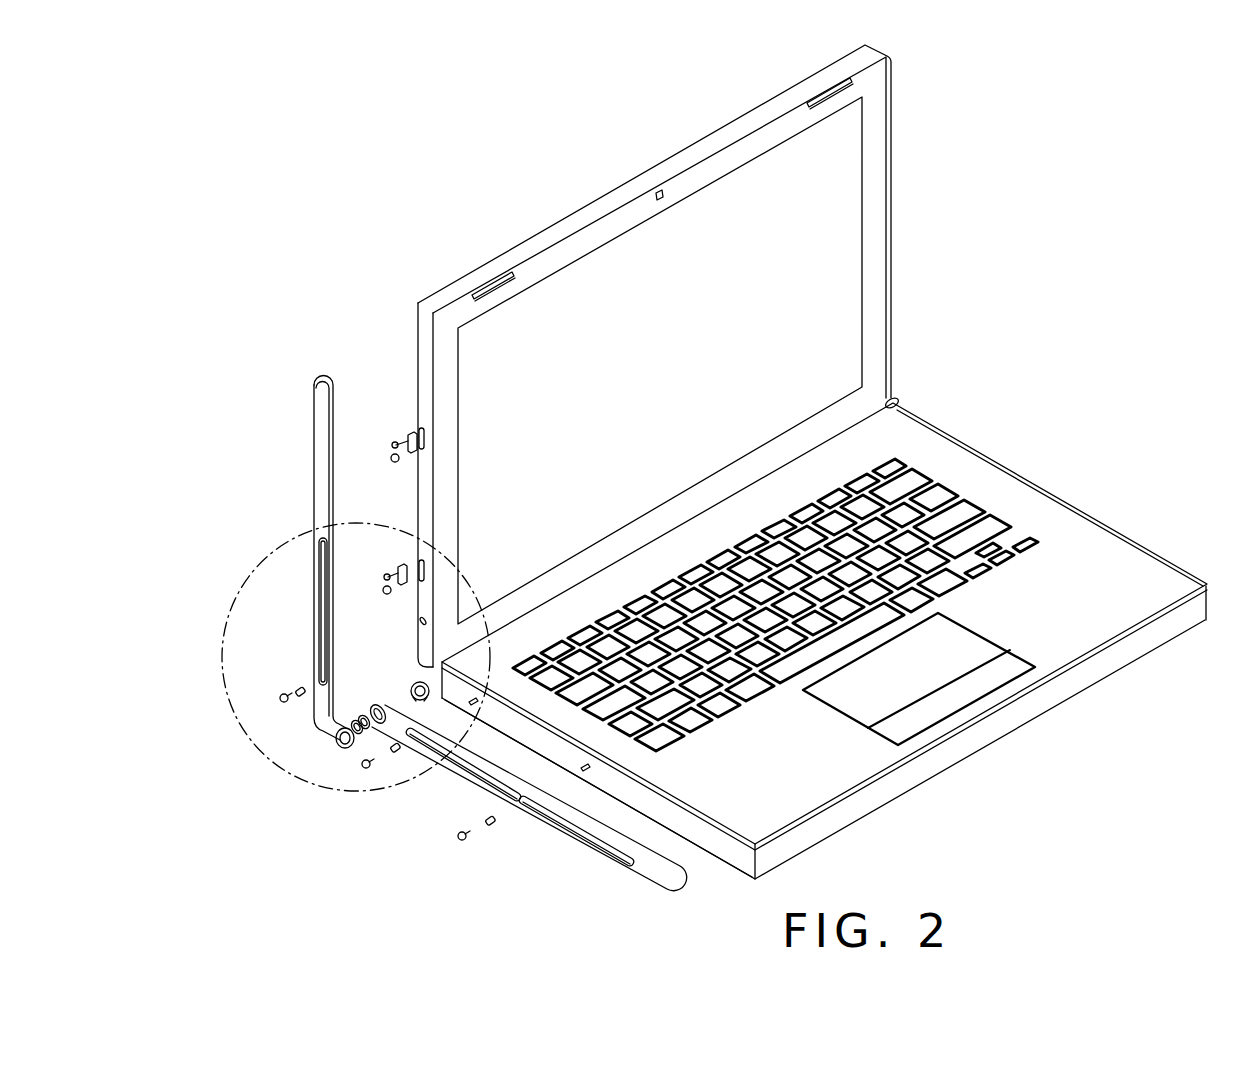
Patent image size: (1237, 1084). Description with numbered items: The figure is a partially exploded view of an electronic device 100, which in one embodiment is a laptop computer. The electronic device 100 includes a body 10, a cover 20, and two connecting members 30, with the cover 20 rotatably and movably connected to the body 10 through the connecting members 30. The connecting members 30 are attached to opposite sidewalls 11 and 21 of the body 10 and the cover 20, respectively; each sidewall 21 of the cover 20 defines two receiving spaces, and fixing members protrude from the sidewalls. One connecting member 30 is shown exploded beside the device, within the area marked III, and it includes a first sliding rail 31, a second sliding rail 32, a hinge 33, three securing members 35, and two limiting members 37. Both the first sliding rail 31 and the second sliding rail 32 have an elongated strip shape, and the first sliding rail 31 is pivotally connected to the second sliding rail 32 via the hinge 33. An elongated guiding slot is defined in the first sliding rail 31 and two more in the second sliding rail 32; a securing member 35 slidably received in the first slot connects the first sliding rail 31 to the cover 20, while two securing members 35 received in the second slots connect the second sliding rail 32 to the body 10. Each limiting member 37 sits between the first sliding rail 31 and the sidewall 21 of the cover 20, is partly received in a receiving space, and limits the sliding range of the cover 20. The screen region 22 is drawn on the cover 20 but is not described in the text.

The electronic device 100 is at (468, 160).
The body 10 is at (1068, 555).
The sidewall 11 is at (718, 843).
The cover 20 is at (875, 200).
The sidewall 21 is at (423, 370).
The display screen 22 is at (835, 283).
The connecting member 30 is at (985, 445).
The first sliding rail 31 is at (323, 498).
The second sliding rail 32 is at (642, 868).
The hinge 33 is at (413, 688).
The securing member 35 is at (280, 700).
The limiting member 37 is at (393, 430).
The detail view indicator III is at (263, 560).